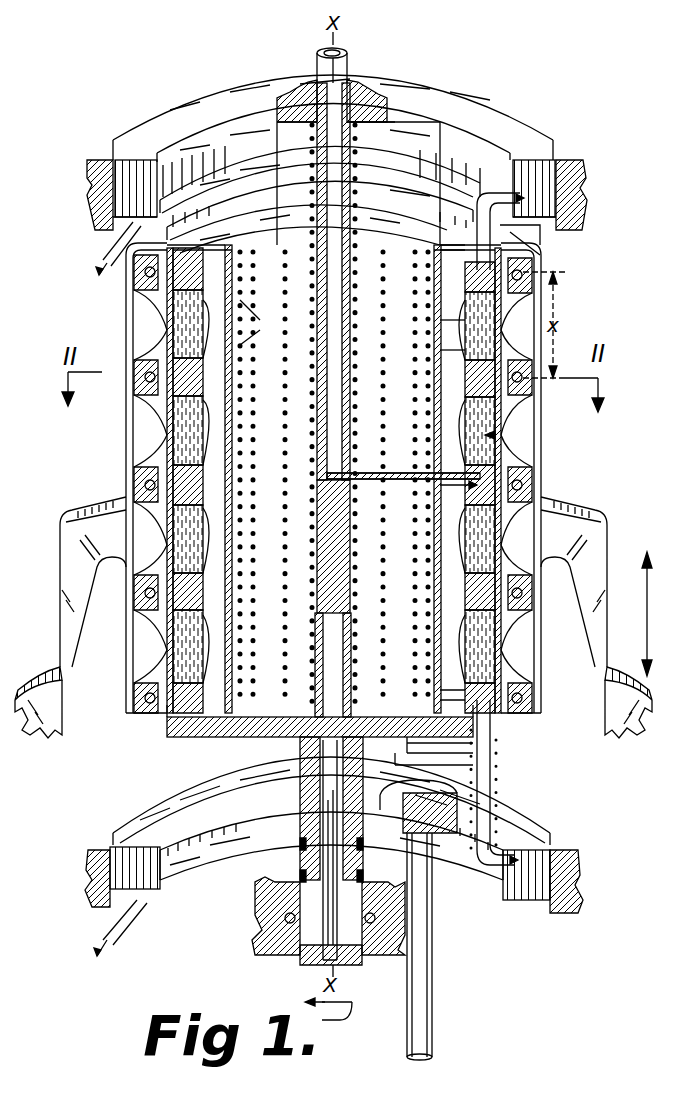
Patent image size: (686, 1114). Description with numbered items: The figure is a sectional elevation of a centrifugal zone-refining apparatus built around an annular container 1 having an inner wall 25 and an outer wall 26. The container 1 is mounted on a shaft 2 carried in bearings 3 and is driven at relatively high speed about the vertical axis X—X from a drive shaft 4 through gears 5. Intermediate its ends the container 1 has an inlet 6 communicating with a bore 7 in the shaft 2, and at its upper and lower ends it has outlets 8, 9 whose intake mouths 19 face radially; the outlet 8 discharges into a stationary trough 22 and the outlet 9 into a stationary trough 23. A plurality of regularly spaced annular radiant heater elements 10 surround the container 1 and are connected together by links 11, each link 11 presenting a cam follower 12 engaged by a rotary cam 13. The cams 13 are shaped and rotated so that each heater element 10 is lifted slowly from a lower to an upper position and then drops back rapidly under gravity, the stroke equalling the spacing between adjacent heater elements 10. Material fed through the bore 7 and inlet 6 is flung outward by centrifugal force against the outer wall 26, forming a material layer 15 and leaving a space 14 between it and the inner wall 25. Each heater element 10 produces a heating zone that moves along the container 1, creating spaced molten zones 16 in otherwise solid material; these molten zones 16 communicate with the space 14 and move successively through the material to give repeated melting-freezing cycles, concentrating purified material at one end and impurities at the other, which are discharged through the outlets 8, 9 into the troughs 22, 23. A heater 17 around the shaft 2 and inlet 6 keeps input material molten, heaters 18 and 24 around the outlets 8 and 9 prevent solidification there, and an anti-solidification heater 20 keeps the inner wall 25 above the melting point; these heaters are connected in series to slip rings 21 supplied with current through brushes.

The annular container 1 is at (500, 433).
The shaft 2 is at (320, 570).
The bearings 3 is at (360, 95).
The drive shaft 4 is at (427, 992).
The gears 5 is at (388, 800).
The inlet 6 is at (340, 476).
The bore 7 is at (335, 170).
The outlet 8 is at (520, 236).
The outlet 9 is at (492, 777).
The annular radiant heater elements 10 is at (140, 360).
The links 11 is at (128, 432).
The cam follower 12 is at (64, 637).
The rotary cam 13 is at (50, 720).
The space 14 is at (215, 525).
The material layer 15 is at (190, 550).
The molten zones 16 is at (468, 384).
The heater 17 is at (311, 403).
The heater 18 is at (495, 200).
The intake mouths 19 is at (465, 272).
The anti-solidification heater 20 is at (245, 328).
The slip rings 21 is at (300, 877).
The stationary trough 22 is at (125, 190).
The stationary trough 23 is at (125, 843).
The heater 24 is at (490, 752).
The inner wall 25 is at (465, 370).
The outer wall 26 is at (465, 322).